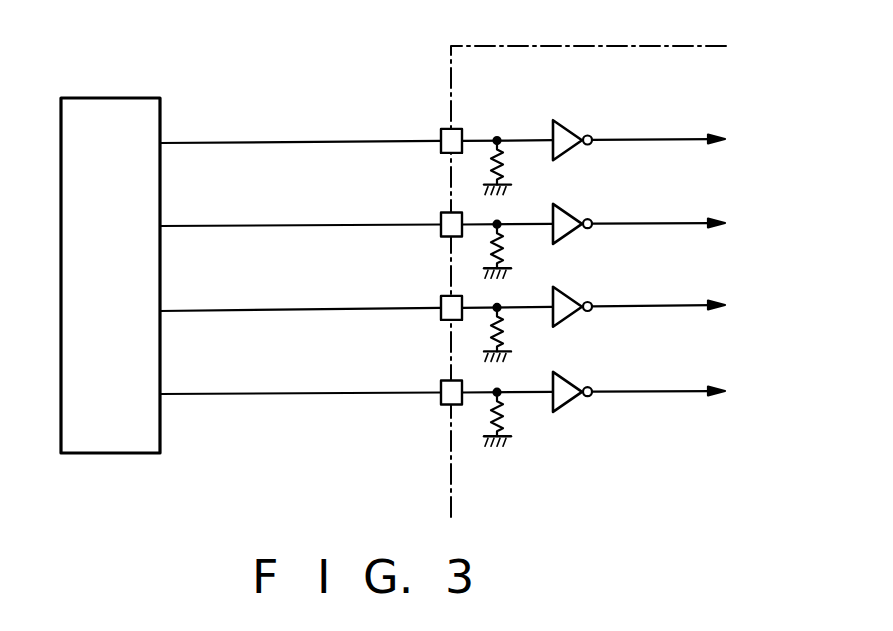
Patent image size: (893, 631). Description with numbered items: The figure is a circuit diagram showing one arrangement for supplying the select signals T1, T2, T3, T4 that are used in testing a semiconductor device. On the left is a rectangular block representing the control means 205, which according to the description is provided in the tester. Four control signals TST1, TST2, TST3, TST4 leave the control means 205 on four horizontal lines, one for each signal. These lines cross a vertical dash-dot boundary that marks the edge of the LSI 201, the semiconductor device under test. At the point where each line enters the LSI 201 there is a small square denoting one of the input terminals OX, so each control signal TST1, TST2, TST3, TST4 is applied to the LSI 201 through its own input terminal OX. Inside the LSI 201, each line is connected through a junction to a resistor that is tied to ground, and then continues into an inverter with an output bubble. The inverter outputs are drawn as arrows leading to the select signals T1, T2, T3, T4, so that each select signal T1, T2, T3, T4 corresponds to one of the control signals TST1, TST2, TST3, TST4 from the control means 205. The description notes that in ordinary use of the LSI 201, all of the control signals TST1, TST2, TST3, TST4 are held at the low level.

The control means 205 is at (120, 98).
The LSI 201 is at (491, 46).
The input terminals OX is at (449, 129).
The control signal TST1 is at (300, 129).
The control signal TST2 is at (300, 212).
The control signal TST3 is at (300, 297).
The control signal TST4 is at (300, 380).
The select signal T1 is at (681, 140).
The select signal T2 is at (681, 224).
The select signal T3 is at (681, 306).
The select signal T4 is at (681, 392).